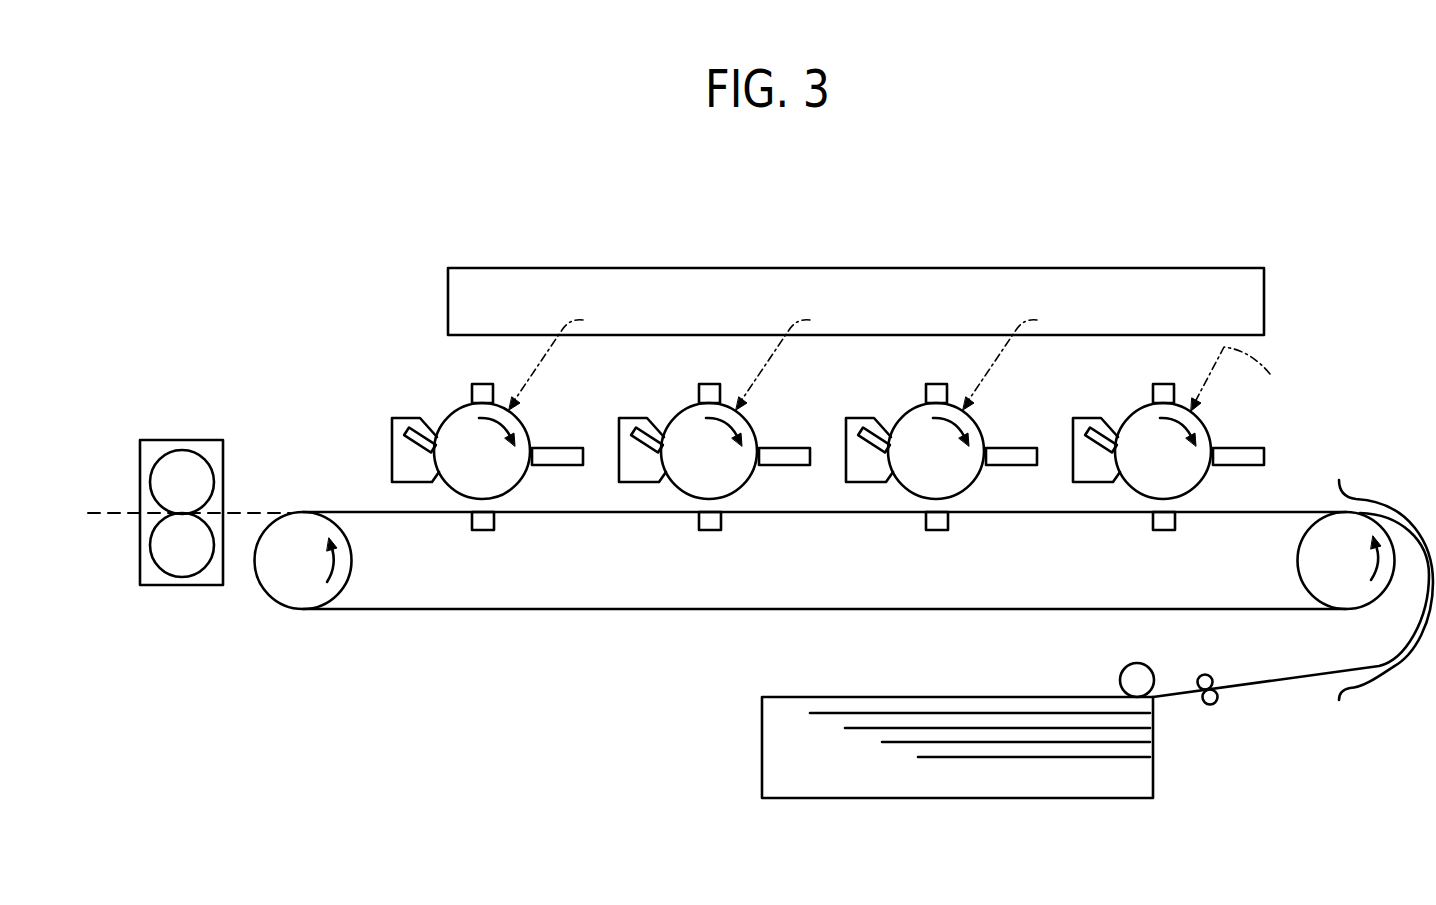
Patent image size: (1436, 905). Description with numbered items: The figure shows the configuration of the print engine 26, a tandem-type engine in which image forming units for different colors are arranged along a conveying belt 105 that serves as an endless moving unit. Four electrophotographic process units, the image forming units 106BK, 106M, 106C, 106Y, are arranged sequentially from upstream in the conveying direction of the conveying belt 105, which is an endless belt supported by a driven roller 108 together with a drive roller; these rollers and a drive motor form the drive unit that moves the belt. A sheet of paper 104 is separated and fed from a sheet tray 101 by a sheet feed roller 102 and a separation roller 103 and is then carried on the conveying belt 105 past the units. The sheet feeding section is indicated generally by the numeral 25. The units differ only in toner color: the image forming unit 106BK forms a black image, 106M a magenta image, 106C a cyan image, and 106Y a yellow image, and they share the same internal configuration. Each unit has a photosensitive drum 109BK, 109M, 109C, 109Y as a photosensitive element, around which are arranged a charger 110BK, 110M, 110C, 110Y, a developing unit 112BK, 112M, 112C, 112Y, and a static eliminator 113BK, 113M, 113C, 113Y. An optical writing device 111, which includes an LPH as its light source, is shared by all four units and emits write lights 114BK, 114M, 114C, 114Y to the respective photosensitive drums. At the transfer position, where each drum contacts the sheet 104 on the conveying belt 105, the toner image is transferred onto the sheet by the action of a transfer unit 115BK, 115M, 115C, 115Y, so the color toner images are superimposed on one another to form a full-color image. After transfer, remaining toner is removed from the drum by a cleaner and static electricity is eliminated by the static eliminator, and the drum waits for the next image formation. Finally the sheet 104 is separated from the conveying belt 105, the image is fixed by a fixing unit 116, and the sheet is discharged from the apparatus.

The print engine 26 is at (280, 243).
The optical writing device 111 is at (1248, 268).
The image forming unit 106Y is at (507, 368).
The image forming unit 106C is at (725, 442).
The image forming unit 106M is at (952, 442).
The image forming unit 106BK is at (1188, 440).
The photosensitive drum 109Y is at (525, 478).
The photosensitive drum 109C is at (743, 455).
The photosensitive drum 109M is at (970, 455).
The photosensitive drum 109BK is at (1204, 455).
The charger 110Y is at (476, 384).
The charger 110C is at (692, 371).
The charger 110M is at (919, 371).
The charger 110BK is at (1145, 370).
The developing unit 112Y is at (575, 426).
The developing unit 112C is at (793, 432).
The developing unit 112M is at (1020, 432).
The developing unit 112BK is at (1252, 432).
The static eliminator 113Y is at (407, 418).
The static eliminator 113C is at (626, 424).
The static eliminator 113M is at (853, 424).
The static eliminator 113BK is at (1076, 424).
The write light 114Y is at (573, 356).
The write light 114C is at (800, 356).
The write light 114M is at (1027, 356).
The write light 114BK is at (1267, 379).
The transfer unit 115Y is at (490, 531).
The transfer unit 115C is at (729, 549).
The transfer unit 115M is at (956, 549).
The transfer unit 115BK is at (1187, 548).
The conveying belt 105 is at (642, 612).
The driven roller 108 is at (1310, 597).
The fixing unit 116 is at (160, 440).
The sheet feeding unit 25 is at (968, 723).
The sheet tray 101 is at (783, 697).
The sheet of paper 104 is at (948, 712).
The sheet feed roller 102 is at (1122, 666).
The separation roller 103 is at (1213, 705).